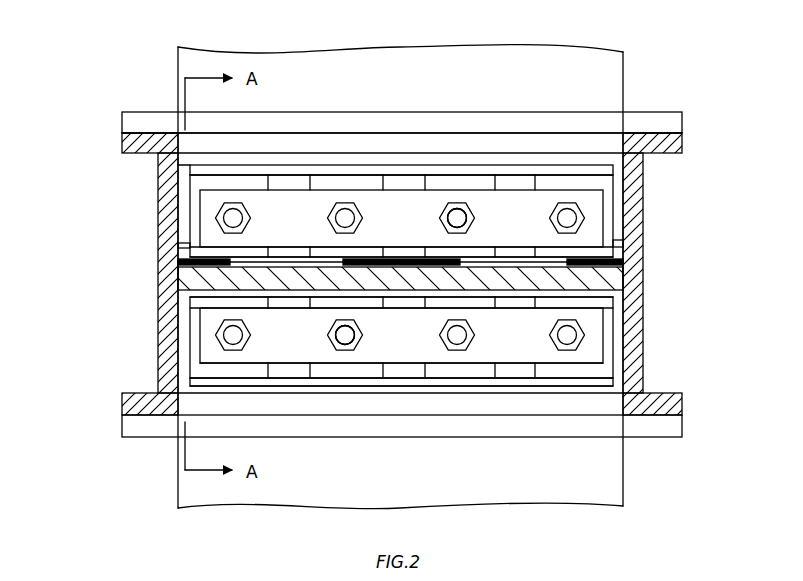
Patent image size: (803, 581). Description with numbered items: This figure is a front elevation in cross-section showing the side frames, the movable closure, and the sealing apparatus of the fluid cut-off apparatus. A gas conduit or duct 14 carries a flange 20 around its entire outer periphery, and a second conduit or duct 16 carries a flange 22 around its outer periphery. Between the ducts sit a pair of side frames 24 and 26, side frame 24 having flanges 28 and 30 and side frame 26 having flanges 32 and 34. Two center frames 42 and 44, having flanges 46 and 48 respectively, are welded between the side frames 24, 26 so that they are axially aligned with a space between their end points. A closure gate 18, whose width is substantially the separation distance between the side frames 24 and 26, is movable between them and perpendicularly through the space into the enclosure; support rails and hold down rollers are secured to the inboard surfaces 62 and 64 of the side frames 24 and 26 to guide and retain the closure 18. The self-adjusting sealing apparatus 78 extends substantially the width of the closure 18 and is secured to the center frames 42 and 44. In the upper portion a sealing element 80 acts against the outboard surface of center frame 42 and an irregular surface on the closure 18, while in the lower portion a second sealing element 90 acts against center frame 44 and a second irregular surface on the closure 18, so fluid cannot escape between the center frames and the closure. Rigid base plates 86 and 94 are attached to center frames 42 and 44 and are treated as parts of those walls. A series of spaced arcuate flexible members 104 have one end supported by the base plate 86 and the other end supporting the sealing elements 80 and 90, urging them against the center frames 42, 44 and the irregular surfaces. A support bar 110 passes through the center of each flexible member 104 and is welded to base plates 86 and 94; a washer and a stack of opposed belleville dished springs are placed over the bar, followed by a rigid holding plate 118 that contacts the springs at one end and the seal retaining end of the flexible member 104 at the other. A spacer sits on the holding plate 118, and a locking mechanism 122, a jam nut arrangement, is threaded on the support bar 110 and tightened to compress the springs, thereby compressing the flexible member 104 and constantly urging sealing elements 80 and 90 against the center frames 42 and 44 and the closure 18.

The gas conduit or duct 14 is at (625, 56).
The second conduit or duct 16 is at (623, 510).
The closure gate 18 is at (603, 280).
The flange 20 is at (655, 112).
The flange 22 is at (660, 437).
The side frame 24 is at (157, 290).
The side frame 26 is at (645, 335).
The flange 28 is at (122, 150).
The flange 30 is at (122, 402).
The flange 32 is at (683, 147).
The flange 34 is at (680, 400).
The center frame 42 is at (203, 162).
The center frame 44 is at (505, 380).
The flange 46 is at (287, 132).
The flange 48 is at (573, 373).
The inboard surface 62 is at (187, 203).
The inboard surface 64 is at (618, 192).
The self-adjusting sealing apparatus 78 is at (597, 154).
The sealing element 80 is at (290, 253).
The rigid base plate 86 is at (545, 178).
The second sealing element 90 is at (615, 294).
The rigid base plate 94 is at (475, 372).
The flexible member 104 is at (236, 185).
The support bar 110 is at (483, 250).
The rigid holding plate 118 is at (450, 202).
The locking mechanism 122 is at (457, 218).